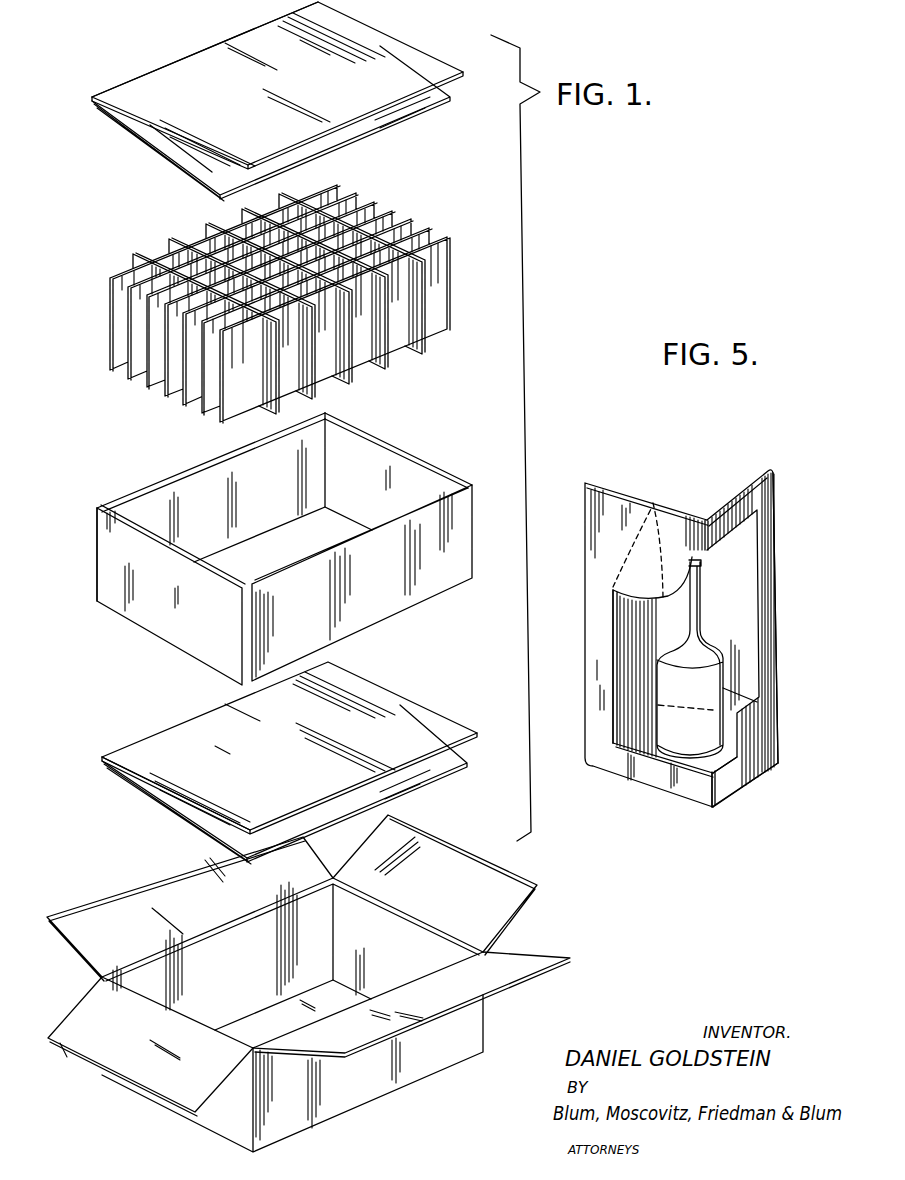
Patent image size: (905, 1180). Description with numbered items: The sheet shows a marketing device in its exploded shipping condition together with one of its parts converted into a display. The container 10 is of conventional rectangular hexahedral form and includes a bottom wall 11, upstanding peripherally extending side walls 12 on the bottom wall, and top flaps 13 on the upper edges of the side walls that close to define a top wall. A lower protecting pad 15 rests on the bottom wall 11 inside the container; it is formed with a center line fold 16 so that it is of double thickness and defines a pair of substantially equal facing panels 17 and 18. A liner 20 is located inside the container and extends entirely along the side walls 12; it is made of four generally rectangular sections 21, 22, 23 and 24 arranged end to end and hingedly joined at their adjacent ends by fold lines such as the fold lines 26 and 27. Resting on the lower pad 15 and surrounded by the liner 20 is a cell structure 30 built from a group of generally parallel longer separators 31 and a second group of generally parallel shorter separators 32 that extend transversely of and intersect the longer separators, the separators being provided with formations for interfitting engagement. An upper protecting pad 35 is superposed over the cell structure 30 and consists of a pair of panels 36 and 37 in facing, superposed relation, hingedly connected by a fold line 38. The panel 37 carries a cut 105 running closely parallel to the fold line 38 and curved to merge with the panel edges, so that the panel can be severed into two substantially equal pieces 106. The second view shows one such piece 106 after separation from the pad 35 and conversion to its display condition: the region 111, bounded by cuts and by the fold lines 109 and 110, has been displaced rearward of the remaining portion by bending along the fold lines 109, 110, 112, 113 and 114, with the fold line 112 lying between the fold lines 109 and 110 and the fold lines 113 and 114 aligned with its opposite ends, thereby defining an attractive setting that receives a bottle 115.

In FIG. 1, the container 10 is at (308, 988).
In FIG. 1, the bottom wall 11 is at (337, 998).
In FIG. 1, the side walls 12 is at (258, 937).
In FIG. 1, the top flaps 13 is at (128, 883).
In FIG. 1, the lower protecting pad 15 is at (291, 760).
In FIG. 1, the center line fold 16 is at (152, 735).
In FIG. 1, the facing panel 17 is at (433, 773).
In FIG. 1, the facing panel 18 is at (373, 705).
In FIG. 1, the liner 20 is at (270, 543).
In FIG. 1, the rectangular section 21 is at (430, 583).
In FIG. 1, the rear right wall of inner box 22 is at (373, 460).
In FIG. 1, the rectangular section 23 is at (203, 483).
In FIG. 1, the rectangular section 24 is at (167, 618).
In FIG. 1, the fold line 26 is at (327, 450).
In FIG. 1, the fold line 27 is at (98, 543).
In FIG. 1, the cell structure 30 is at (294, 294).
In FIG. 1, the longer separators 31 is at (386, 206).
In FIG. 1, the shorter separators 32 is at (415, 343).
In FIG. 1, the upper protecting pad 35 is at (277, 101).
In FIG. 1, the panel 36 is at (183, 157).
In FIG. 1, the panel 37 is at (178, 107).
In FIG. 5, the panel 37 is at (778, 643).
In FIG. 1, the fold line 38 is at (178, 60).
In FIG. 5, the cut 105 is at (645, 783).
In FIG. 5, the piece 106 is at (617, 492).
In FIG. 5, the fold line 109 is at (767, 633).
In FIG. 5, the fold line 110 is at (610, 645).
In FIG. 5, the region 111 is at (623, 680).
In FIG. 5, the fold line 112 is at (663, 610).
In FIG. 5, the fold line 113 is at (713, 790).
In FIG. 5, the fold line 114 is at (715, 512).
In FIG. 5, the bottle 115 is at (677, 730).